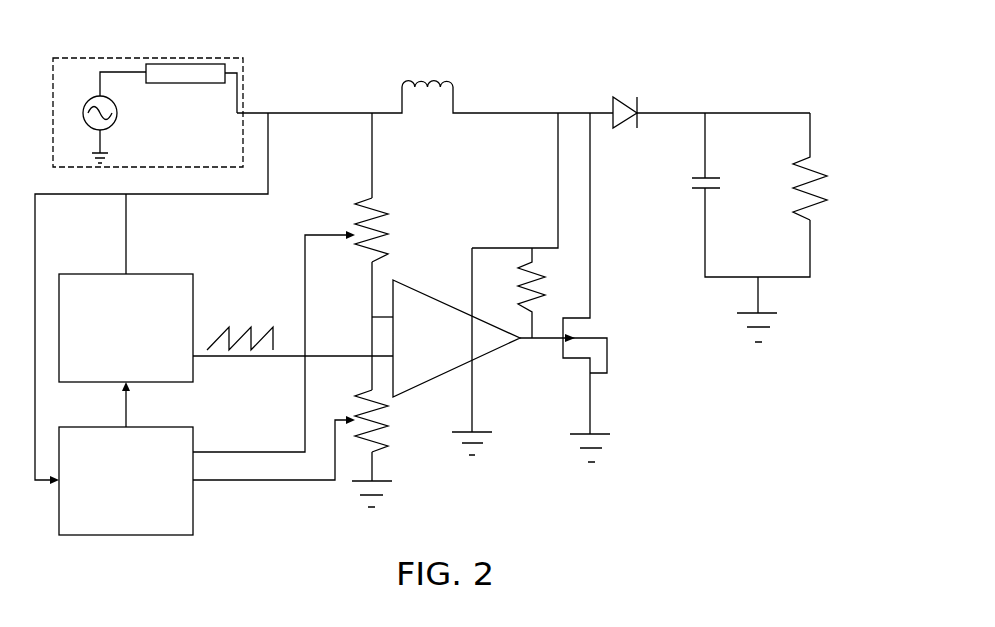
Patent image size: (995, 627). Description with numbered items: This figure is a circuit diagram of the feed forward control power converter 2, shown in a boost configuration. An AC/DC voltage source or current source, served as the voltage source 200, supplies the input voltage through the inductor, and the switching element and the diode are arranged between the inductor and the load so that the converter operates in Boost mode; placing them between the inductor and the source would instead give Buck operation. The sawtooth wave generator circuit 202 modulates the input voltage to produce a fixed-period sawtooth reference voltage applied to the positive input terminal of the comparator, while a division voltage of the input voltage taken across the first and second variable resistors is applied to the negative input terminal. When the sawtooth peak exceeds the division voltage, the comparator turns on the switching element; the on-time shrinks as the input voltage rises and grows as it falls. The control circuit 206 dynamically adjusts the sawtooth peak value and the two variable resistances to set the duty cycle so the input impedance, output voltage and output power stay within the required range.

The feed forward control power converter 2 is at (688, 435).
The voltage source 200 is at (148, 58).
The sawtooth wave generator circuit 202 is at (166, 328).
The control circuit 206 is at (207, 383).